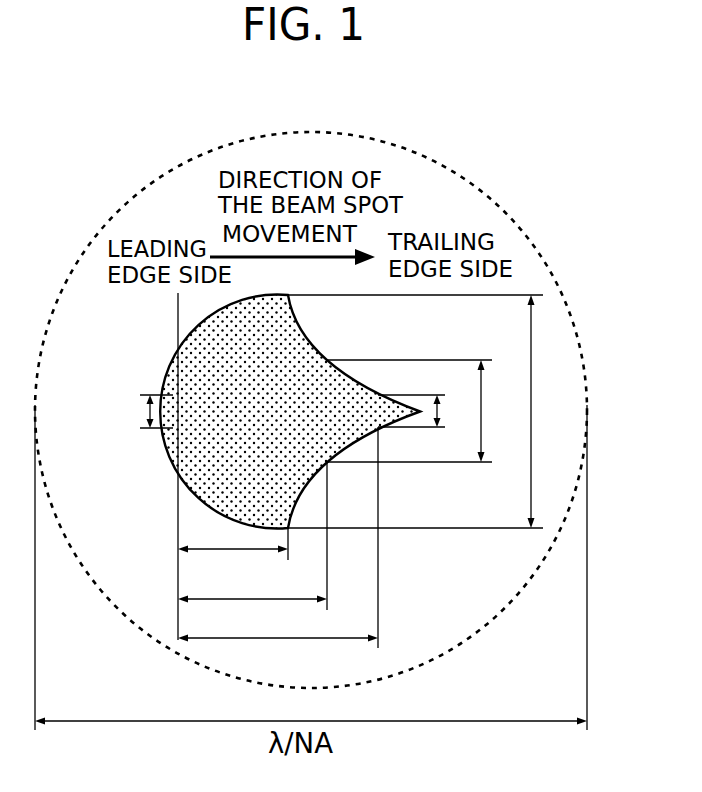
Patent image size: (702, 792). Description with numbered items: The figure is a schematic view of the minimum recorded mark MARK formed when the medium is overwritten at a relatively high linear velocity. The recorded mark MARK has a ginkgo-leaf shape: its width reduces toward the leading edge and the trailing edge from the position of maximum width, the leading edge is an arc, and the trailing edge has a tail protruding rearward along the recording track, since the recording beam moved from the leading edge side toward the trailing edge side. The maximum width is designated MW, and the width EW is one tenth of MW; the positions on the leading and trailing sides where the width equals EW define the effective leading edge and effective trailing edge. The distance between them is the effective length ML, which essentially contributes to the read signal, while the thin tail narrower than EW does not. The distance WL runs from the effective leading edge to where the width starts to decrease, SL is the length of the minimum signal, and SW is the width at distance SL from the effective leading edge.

The recorded mark MARK is at (197, 344).
The maximum width MW is at (554, 411).
The width S_W SW is at (501, 411).
The width E_w EW is at (291, 411).
The distance W_L WL is at (233, 568).
The length of the minimum signal SL is at (252, 619).
The effective length ML is at (278, 658).